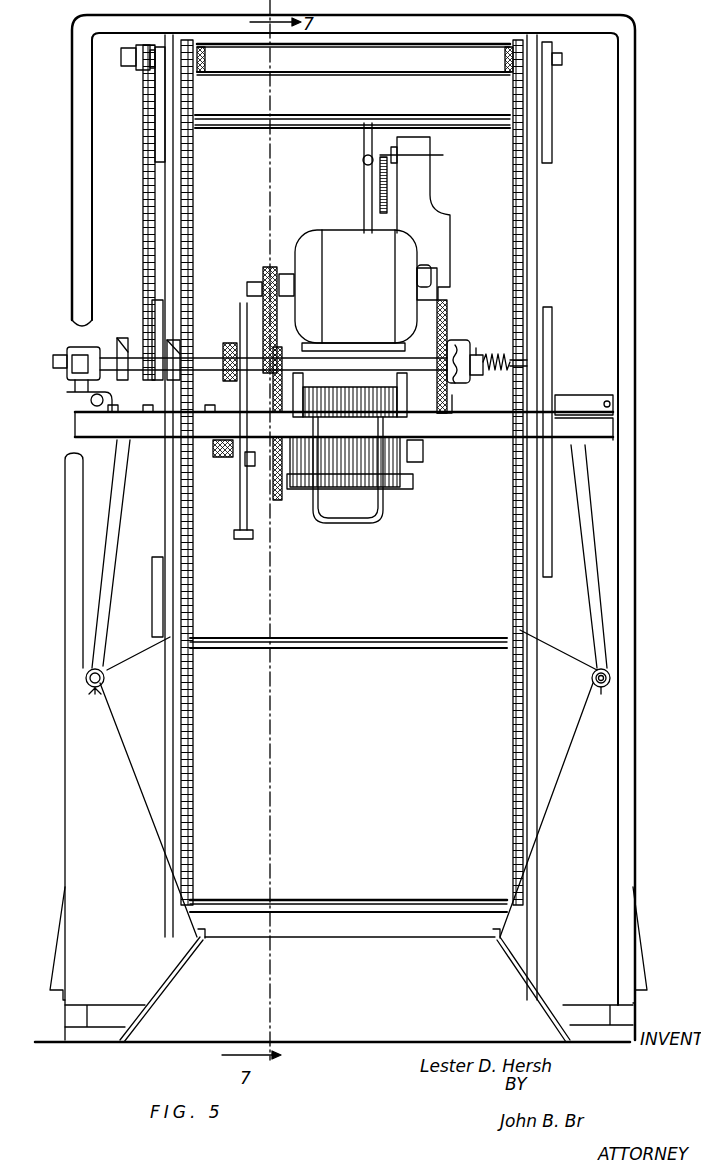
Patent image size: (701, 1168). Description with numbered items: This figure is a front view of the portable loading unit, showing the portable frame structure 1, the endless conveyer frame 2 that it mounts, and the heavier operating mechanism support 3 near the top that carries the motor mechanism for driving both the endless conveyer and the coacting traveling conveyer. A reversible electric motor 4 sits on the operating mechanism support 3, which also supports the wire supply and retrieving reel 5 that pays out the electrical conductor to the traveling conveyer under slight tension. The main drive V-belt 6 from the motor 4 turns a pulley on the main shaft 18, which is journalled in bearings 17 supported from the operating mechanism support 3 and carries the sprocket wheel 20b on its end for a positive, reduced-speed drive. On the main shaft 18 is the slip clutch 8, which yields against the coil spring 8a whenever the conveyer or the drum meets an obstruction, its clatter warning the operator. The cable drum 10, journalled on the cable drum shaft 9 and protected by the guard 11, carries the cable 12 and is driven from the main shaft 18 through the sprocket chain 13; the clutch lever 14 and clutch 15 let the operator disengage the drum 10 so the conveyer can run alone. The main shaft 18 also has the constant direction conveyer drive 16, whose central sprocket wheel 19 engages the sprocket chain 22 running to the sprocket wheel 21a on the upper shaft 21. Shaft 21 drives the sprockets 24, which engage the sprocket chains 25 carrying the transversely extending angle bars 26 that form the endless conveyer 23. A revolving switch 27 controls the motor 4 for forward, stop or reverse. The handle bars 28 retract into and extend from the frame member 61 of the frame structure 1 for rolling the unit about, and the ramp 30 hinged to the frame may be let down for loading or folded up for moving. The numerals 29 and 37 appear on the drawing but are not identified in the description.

The frame of the portable frame structure 1 is at (660, 125).
The endless conveyer frame 2 is at (537, 268).
The operating mechanism support 3 is at (487, 437).
The reversible electric motor 4 is at (335, 245).
The wire supply and retrieving reel 5 is at (366, 160).
The main drive V-belt 6 is at (272, 268).
The slip clutch 8 is at (452, 355).
The coil spring 8a is at (498, 354).
The cable drum shaft 9 is at (424, 452).
The cable drum 10 is at (402, 520).
The guard 11 is at (363, 540).
The cable 12 is at (350, 505).
The sprocket chain 13 is at (271, 490).
The clutch lever 14 is at (243, 540).
The clutch 15 is at (236, 470).
The constant direction conveyer drive 16 is at (196, 342).
The bearings 17 is at (68, 347).
The main shaft 18 is at (58, 372).
The central sprocket wheel 19 is at (140, 340).
The sprocket wheel 20b is at (448, 405).
The shaft 21 is at (121, 57).
The sprocket wheel 21a is at (147, 70).
The sprocket chain 22 is at (142, 195).
The endless conveyer 23 is at (363, 62).
The sprockets 24 is at (203, 60).
The sprocket chains 25 is at (511, 200).
The transversely extending angle bars 26 is at (296, 120).
The revolving switch 27 is at (431, 272).
The handle bars 28 is at (93, 690).
The upper winding drum 29 is at (392, 390).
The ramp 30 is at (352, 916).
The motor shaft end 37 is at (248, 288).
The frame member 61 is at (613, 677).